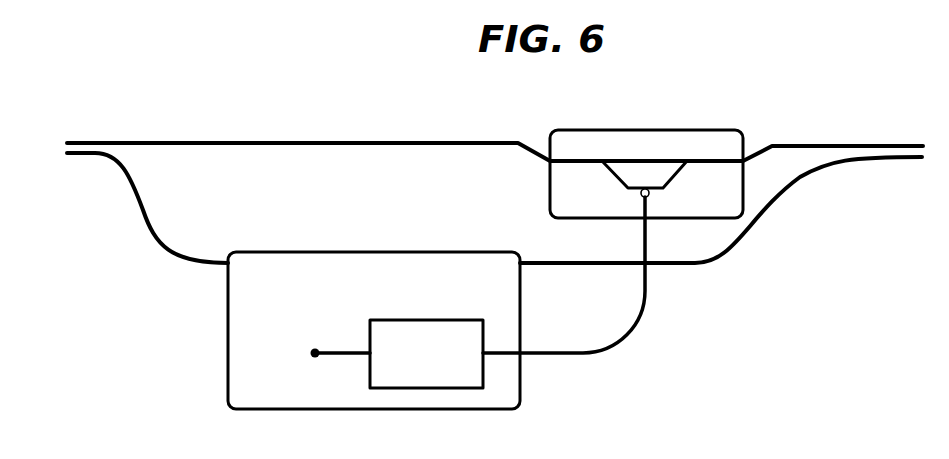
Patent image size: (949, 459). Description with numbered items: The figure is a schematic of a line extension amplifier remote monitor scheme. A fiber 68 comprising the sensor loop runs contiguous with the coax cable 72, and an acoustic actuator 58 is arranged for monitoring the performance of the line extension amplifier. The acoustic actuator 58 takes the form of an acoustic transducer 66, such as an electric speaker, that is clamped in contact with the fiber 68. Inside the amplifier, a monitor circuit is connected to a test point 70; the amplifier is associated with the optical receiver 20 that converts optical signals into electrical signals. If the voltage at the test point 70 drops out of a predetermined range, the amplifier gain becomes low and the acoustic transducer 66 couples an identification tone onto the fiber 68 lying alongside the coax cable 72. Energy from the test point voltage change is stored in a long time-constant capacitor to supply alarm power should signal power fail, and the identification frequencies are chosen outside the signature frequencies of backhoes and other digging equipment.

The optical receiver 20 is at (416, 346).
The acoustic actuator 58 is at (772, 112).
The acoustic transducer 66 is at (670, 182).
The fiber 68 is at (303, 141).
The test point 70 is at (313, 343).
The coax cable 72 is at (142, 208).